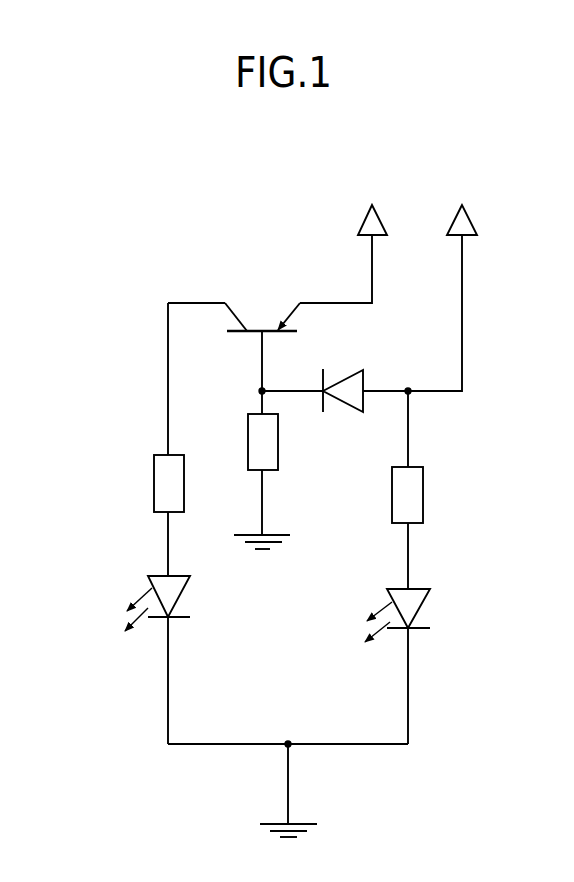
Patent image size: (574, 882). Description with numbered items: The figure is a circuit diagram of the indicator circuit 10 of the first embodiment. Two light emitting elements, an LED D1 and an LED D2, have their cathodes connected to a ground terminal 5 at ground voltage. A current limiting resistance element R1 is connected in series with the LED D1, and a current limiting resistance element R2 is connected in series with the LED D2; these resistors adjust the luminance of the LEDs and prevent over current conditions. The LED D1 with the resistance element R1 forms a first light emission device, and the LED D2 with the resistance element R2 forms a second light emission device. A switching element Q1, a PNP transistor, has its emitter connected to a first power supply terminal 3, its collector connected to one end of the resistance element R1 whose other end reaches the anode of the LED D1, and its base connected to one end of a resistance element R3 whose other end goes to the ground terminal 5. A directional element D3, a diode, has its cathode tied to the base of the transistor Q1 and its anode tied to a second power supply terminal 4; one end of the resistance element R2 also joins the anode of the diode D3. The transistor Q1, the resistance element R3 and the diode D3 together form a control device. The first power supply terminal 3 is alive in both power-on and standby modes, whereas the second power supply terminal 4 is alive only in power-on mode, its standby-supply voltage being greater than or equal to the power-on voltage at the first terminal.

The indicator circuit 10 is at (53, 188).
The first power supply terminal 3 is at (380, 223).
The second power supply terminal 4 is at (469, 223).
The ground terminal 5 is at (298, 671).
The switching element Q1 is at (262, 302).
The directional element D3 is at (363, 383).
The current limiting resistance element R1 is at (148, 483).
The current limiting resistance element R2 is at (428, 495).
The resistance element R3 is at (283, 442).
The light emitting element D1 is at (138, 603).
The light emitting element D2 is at (418, 615).